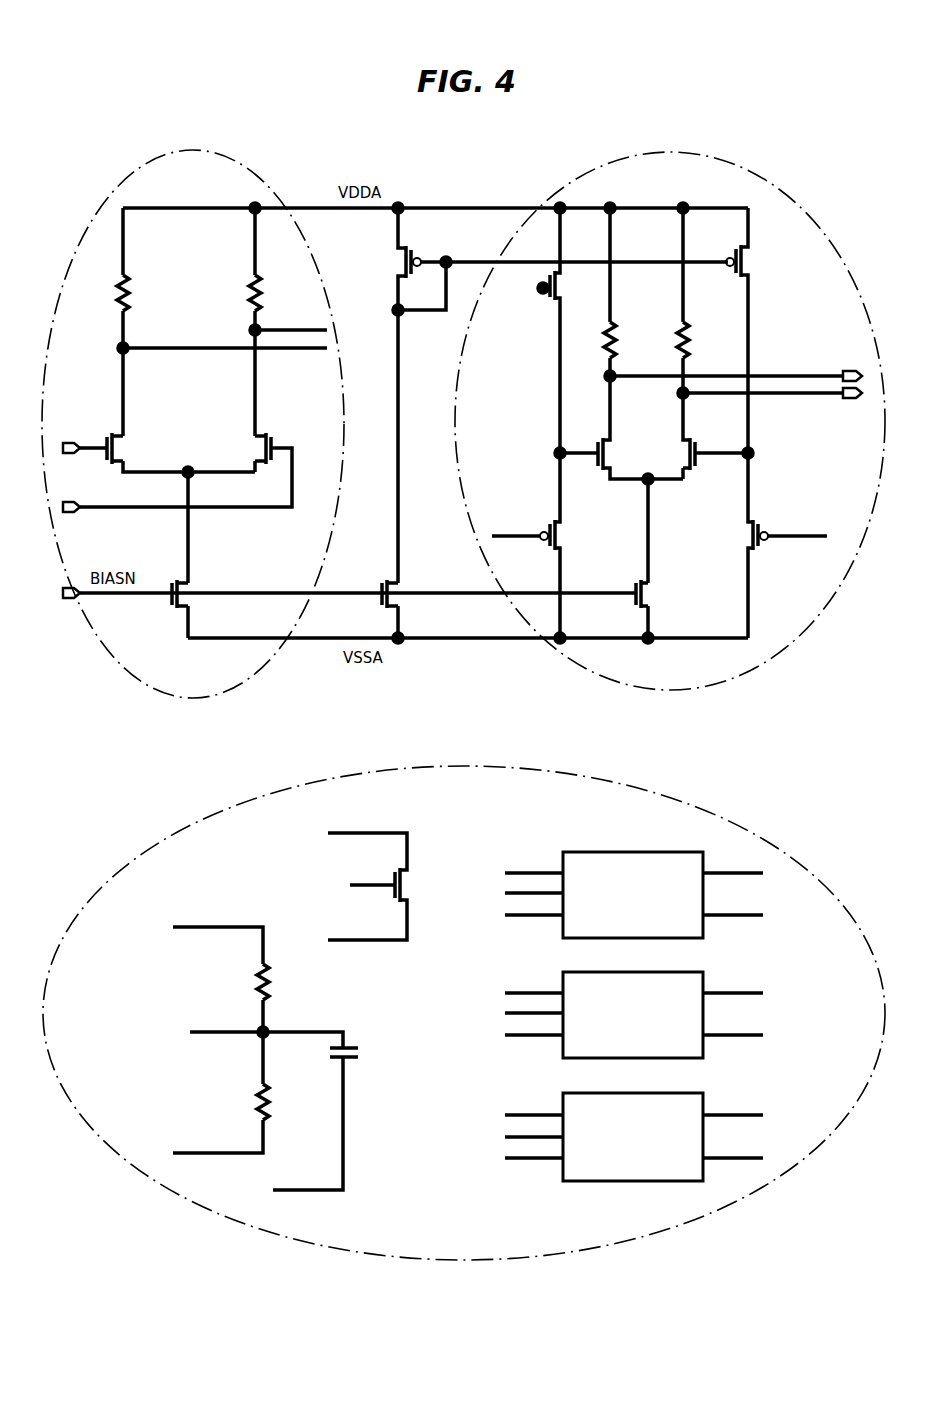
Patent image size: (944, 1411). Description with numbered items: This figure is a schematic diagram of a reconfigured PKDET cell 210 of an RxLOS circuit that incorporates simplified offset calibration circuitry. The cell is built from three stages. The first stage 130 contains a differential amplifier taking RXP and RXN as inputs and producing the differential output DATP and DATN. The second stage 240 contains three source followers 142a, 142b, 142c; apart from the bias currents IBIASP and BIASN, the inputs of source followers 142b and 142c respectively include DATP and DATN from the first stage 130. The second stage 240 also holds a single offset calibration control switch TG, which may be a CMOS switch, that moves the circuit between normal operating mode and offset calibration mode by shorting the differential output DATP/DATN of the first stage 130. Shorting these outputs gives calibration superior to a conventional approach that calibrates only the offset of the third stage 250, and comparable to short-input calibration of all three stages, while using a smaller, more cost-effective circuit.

The reconfigured PKDET cell 210 is at (155, 67).
The first stage 130 is at (238, 166).
The third stage 250 is at (735, 169).
The second stage 240 is at (376, 771).
The source follower 142a is at (606, 896).
The source follower 142b is at (605, 1016).
The source follower 142c is at (601, 1137).